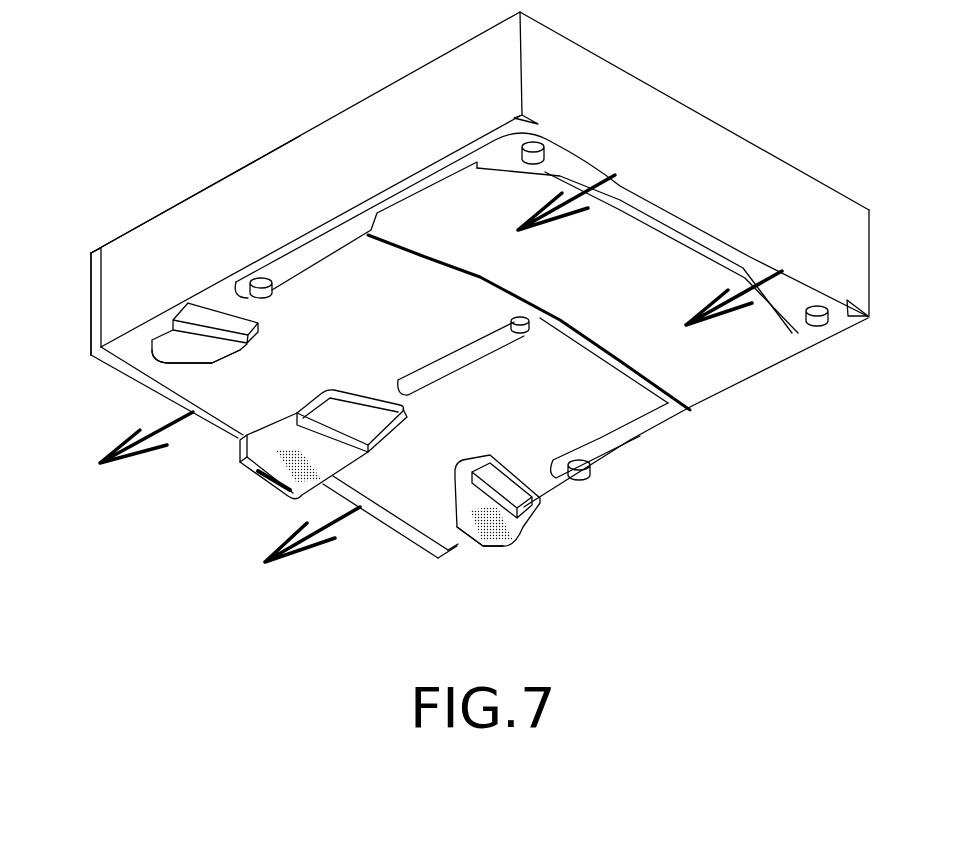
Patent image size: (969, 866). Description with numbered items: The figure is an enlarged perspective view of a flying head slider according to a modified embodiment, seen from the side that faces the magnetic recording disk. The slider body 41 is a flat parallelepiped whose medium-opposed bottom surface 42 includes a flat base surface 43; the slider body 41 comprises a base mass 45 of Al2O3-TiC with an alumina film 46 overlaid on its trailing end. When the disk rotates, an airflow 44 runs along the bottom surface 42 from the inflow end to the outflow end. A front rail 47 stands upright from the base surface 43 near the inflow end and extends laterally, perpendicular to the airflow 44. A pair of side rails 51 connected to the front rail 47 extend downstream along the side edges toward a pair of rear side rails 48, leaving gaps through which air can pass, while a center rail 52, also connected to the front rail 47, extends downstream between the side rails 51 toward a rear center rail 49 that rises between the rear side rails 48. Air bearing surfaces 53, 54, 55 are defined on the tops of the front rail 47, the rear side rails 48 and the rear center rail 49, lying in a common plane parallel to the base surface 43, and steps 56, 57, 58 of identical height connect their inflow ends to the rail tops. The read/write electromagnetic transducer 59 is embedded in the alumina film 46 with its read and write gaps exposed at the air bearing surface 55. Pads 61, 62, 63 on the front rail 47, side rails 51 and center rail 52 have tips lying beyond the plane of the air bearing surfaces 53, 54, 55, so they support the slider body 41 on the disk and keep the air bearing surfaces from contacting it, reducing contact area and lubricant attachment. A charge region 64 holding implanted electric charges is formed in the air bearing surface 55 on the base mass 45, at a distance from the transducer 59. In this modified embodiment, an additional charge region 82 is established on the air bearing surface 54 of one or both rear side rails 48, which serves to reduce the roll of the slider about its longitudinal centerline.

The slider body 41 is at (172, 192).
The bottom surface 42 is at (406, 533).
The base surface 43 is at (366, 327).
The airflow 44 is at (612, 176).
The base mass 45 is at (118, 238).
The alumina film 46 is at (90, 255).
The front rail 47 is at (438, 268).
The rear side rail 48 is at (176, 313).
The rear center rail 49 is at (240, 456).
The side rail 51 is at (298, 243).
The center rail 52 is at (452, 374).
The air bearing surface 53 is at (585, 298).
The air bearing surface 54 is at (215, 354).
The air bearing surface 55 is at (352, 463).
The step 56 is at (672, 230).
The step 57 is at (250, 348).
The step 58 is at (317, 420).
The read/write electromagnetic transducer 59 is at (262, 484).
The pad 61 is at (520, 150).
The pad 62 is at (272, 292).
The pad 63 is at (523, 333).
The charge region 64 is at (308, 486).
The charge region 82 is at (500, 545).